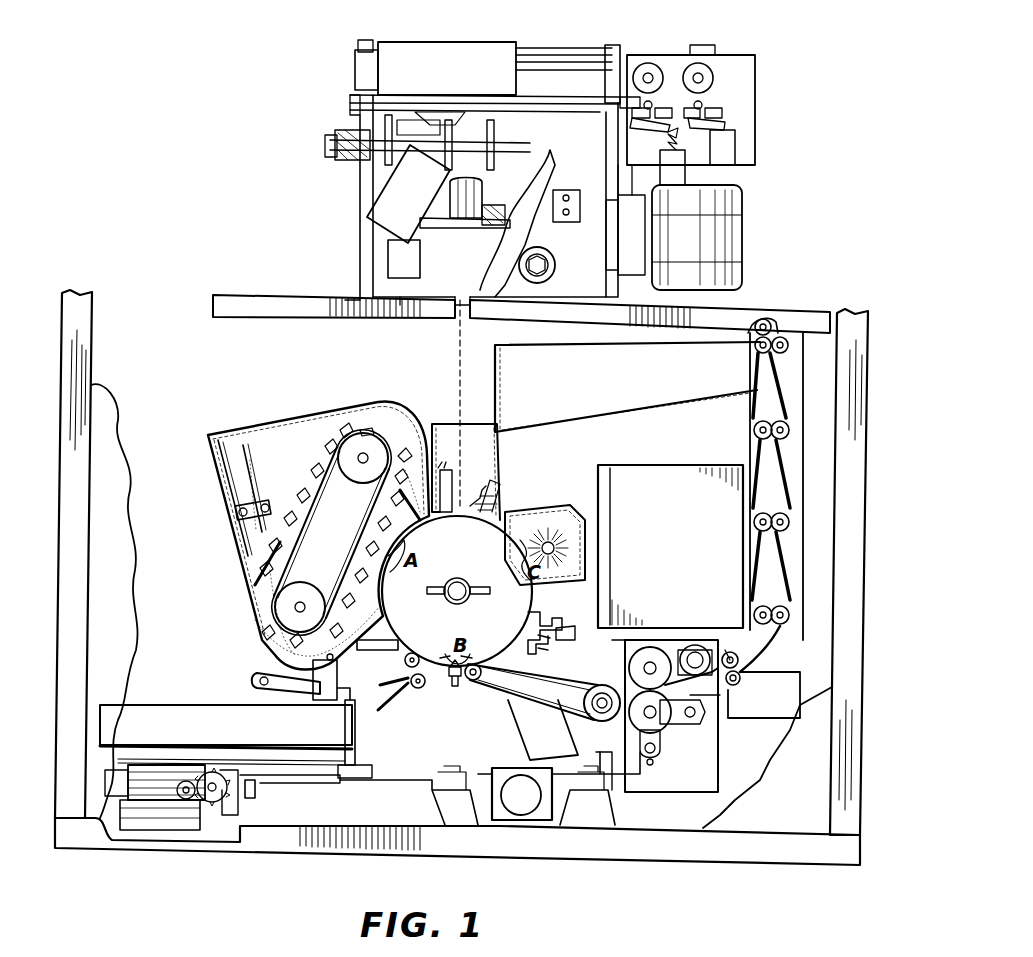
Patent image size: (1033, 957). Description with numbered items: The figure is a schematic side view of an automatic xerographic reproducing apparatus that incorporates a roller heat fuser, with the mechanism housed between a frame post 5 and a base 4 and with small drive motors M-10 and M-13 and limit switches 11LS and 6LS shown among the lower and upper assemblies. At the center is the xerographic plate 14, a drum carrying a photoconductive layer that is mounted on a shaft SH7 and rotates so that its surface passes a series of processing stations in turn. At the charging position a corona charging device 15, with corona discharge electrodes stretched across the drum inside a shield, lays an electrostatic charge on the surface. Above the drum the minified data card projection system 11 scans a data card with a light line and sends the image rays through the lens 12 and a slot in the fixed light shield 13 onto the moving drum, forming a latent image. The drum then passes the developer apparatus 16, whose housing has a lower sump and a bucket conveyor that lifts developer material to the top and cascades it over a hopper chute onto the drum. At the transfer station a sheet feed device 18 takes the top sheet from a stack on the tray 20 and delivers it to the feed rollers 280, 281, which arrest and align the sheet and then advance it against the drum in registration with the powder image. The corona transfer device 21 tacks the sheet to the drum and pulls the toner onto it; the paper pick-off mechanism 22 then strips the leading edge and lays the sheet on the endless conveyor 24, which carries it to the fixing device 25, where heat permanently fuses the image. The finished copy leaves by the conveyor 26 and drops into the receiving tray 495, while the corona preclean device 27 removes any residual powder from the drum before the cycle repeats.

The base frame 4 is at (795, 828).
The frame post 5 is at (110, 406).
The minified data card projection system 11 is at (416, 28).
The lens 12 is at (455, 210).
The motor M-10 is at (742, 240).
The fixed light shield 13 is at (452, 520).
The xerographic plate 14 is at (503, 522).
The corona charging device 15 is at (478, 478).
The developer apparatus 16 is at (260, 412).
The receiving tray 495 is at (633, 412).
The sheet feed device 18 is at (190, 683).
The tray 20 is at (112, 705).
The limit switch 11LS is at (318, 692).
The motor M-13 is at (168, 782).
The limit switch 6LS is at (255, 790).
The corona transfer device 21 is at (458, 688).
The paper pick-off mechanism 22 is at (582, 670).
The endless conveyor 24 is at (572, 718).
The fixing device 25 is at (766, 748).
The conveyor 26 is at (790, 548).
The corona preclean device 27 is at (575, 634).
The feed roller 280 is at (432, 636).
The feed roller 281 is at (425, 698).
The drum shaft SH7 is at (462, 600).